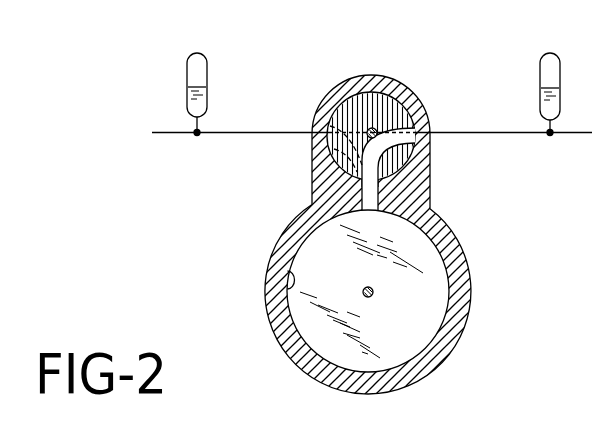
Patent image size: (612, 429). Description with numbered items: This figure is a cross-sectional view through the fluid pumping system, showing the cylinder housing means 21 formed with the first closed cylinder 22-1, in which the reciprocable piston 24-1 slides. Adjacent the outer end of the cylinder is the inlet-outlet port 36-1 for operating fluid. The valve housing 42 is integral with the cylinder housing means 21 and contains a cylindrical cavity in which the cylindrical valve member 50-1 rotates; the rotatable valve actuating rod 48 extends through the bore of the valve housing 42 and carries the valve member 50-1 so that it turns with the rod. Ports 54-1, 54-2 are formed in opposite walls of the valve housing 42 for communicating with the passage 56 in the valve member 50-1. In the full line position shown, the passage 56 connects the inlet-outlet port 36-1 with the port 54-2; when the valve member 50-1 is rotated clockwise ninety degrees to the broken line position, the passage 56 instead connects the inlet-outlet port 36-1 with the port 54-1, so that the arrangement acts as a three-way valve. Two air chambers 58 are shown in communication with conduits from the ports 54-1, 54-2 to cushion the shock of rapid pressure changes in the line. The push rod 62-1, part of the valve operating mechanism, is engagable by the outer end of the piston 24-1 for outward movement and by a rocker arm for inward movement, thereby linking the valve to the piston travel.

The cylinder housing means 21 is at (438, 365).
The first closed cylinder 22-1 is at (289, 271).
The reciprocable piston 24-1 is at (312, 243).
The inlet-outlet port 36-1 is at (376, 195).
The valve housing 42 is at (313, 168).
The rotatable valve actuating rod 48 is at (405, 97).
The valve member 50-1 is at (378, 105).
The port 54-1 is at (310, 128).
The port 54-2 is at (425, 134).
The passage 56 is at (409, 155).
The air chamber 58 is at (188, 57).
The push rod 62-1 is at (372, 294).